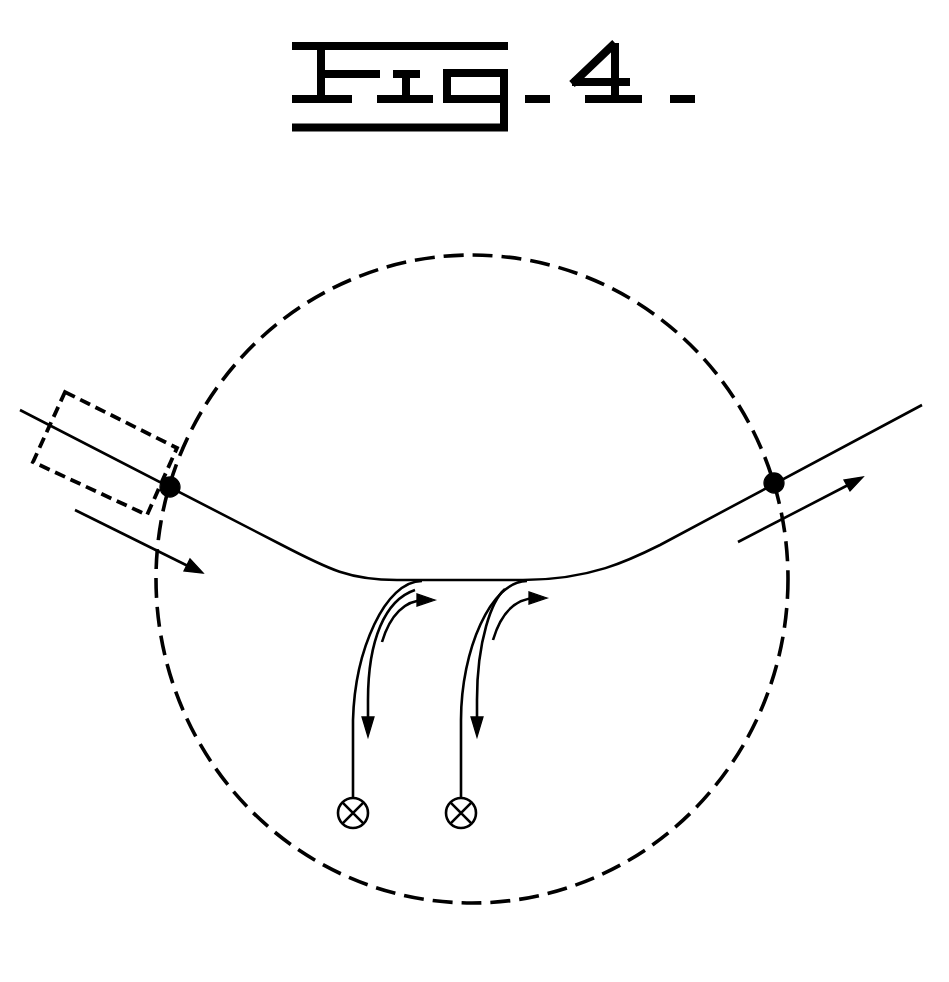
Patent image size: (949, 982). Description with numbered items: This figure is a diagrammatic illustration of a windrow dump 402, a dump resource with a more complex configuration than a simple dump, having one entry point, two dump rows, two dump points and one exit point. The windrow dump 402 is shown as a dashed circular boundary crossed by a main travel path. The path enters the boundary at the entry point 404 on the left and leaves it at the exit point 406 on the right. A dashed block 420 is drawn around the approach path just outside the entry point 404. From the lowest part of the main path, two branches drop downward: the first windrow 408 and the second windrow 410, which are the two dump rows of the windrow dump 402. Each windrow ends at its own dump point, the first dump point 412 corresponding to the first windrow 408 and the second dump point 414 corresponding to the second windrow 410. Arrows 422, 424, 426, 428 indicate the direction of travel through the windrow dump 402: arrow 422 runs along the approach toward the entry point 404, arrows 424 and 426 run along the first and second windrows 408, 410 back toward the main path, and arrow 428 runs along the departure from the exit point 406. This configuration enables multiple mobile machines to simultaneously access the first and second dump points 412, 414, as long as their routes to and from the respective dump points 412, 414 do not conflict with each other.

The windrow dump 402 is at (613, 289).
The entry point 404 is at (178, 484).
The exit point 406 is at (776, 478).
The first windrow 408 is at (354, 658).
The second windrow 410 is at (463, 763).
The first dump point 412 is at (338, 812).
The second dump point 414 is at (480, 810).
The input block 420 is at (107, 413).
The arrow 422 is at (110, 528).
The arrow 424 is at (383, 641).
The arrow 426 is at (495, 640).
The arrow 428 is at (823, 497).